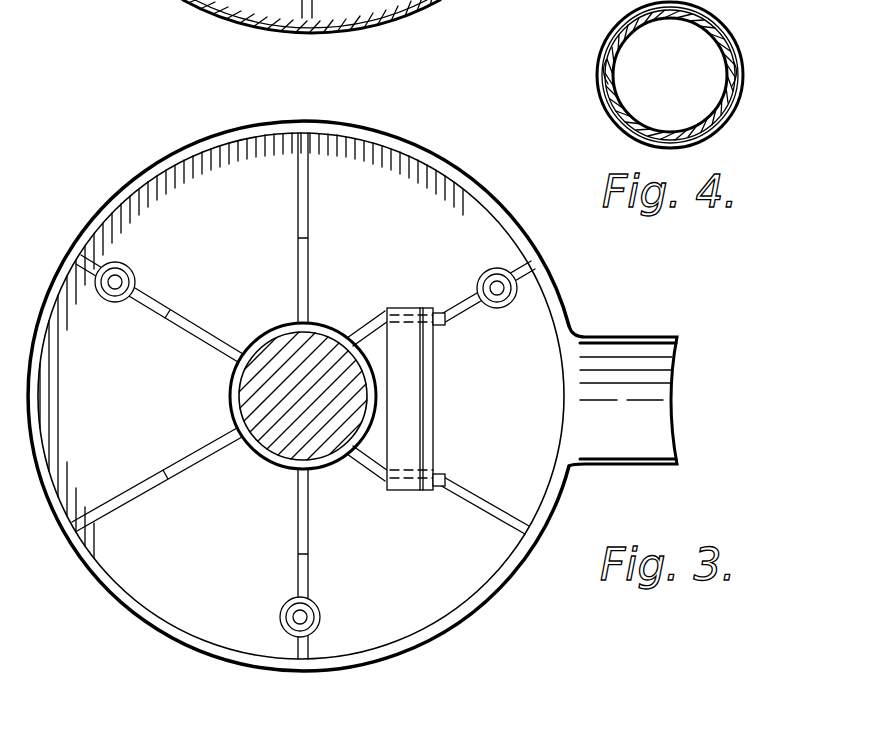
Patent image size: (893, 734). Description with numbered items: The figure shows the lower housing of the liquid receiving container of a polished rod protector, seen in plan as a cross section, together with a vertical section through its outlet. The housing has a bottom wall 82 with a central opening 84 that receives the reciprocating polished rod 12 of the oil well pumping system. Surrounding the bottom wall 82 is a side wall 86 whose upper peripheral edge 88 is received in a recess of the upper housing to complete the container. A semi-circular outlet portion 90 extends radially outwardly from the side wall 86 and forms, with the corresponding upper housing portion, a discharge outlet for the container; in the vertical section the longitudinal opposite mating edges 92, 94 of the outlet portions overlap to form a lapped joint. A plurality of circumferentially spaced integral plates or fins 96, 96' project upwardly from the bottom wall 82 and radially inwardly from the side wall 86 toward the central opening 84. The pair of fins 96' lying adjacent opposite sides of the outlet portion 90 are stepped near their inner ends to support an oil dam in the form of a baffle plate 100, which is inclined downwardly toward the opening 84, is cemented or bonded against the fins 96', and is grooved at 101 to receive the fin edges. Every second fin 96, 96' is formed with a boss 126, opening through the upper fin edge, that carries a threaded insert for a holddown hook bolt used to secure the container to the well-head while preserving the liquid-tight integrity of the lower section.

In FIG. 3, the polished rod 12 is at (266, 388).
In FIG. 3, the bottom wall 82 is at (365, 165).
In FIG. 3, the central opening 84 is at (345, 343).
In FIG. 3, the side wall 86 is at (180, 152).
In FIG. 3, the upper peripheral edge 88 is at (245, 131).
In FIG. 3, the semi-circular outlet portion 90 is at (660, 392).
In FIG. 4, the semi-circular outlet portion 90 is at (715, 128).
In FIG. 4, the mating edge 92 is at (604, 97).
In FIG. 3, the mating edge 94 is at (608, 339).
In FIG. 4, the mating edge 94 is at (602, 68).
In FIG. 3, the fins 96 is at (190, 396).
In FIG. 3, the fins 96' is at (441, 407).
In FIG. 3, the baffle plate 100 is at (428, 396).
In FIG. 3, the grooves 101 is at (440, 324).
In FIG. 3, the bosses 126 is at (137, 282).